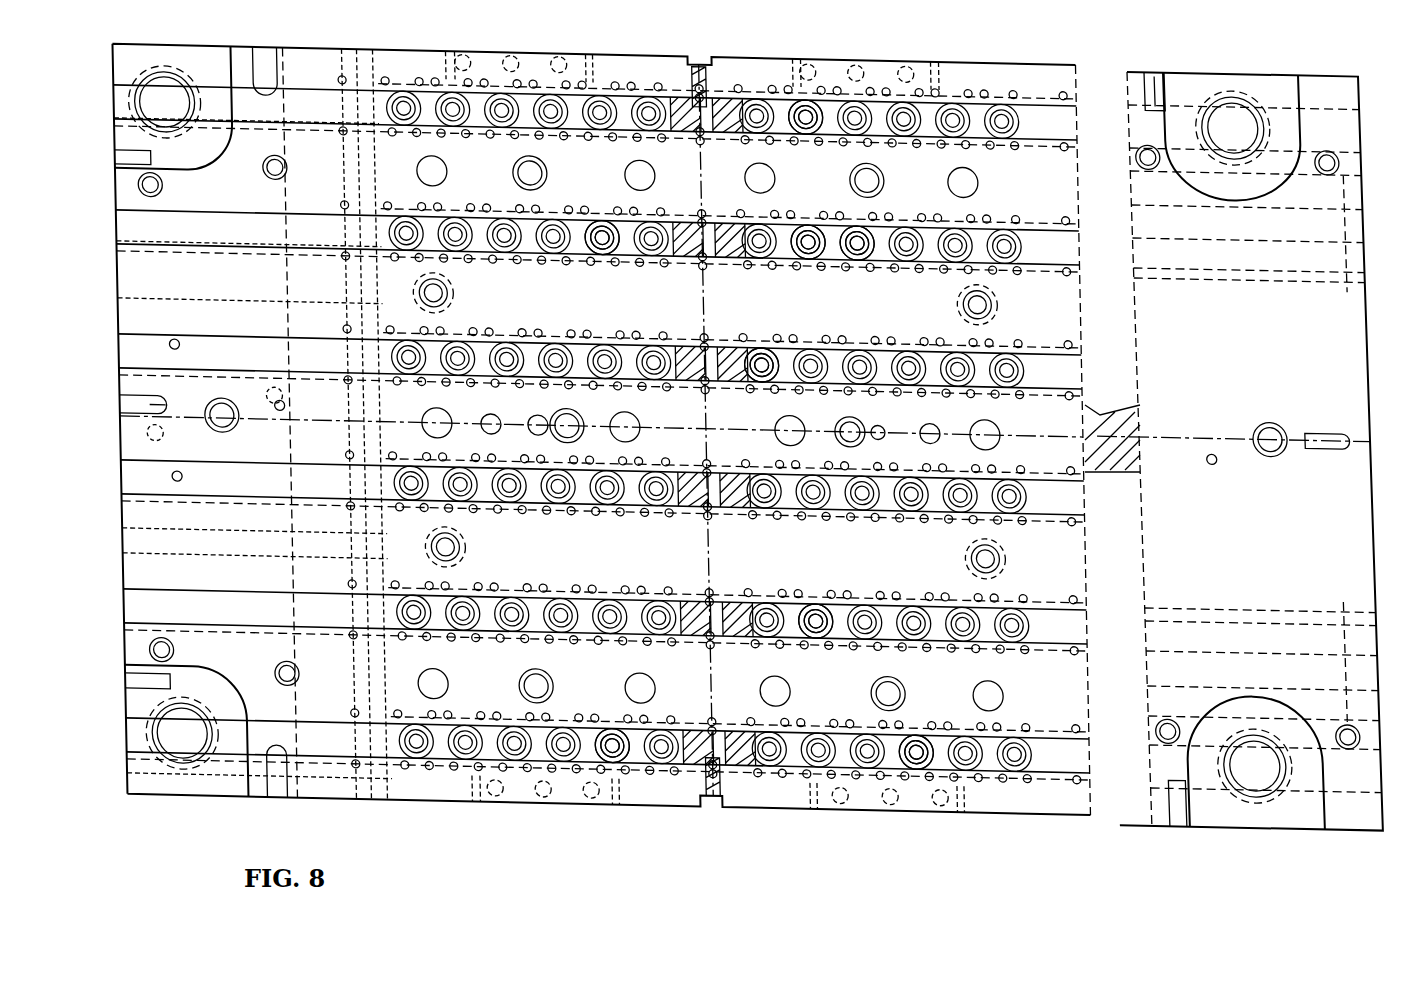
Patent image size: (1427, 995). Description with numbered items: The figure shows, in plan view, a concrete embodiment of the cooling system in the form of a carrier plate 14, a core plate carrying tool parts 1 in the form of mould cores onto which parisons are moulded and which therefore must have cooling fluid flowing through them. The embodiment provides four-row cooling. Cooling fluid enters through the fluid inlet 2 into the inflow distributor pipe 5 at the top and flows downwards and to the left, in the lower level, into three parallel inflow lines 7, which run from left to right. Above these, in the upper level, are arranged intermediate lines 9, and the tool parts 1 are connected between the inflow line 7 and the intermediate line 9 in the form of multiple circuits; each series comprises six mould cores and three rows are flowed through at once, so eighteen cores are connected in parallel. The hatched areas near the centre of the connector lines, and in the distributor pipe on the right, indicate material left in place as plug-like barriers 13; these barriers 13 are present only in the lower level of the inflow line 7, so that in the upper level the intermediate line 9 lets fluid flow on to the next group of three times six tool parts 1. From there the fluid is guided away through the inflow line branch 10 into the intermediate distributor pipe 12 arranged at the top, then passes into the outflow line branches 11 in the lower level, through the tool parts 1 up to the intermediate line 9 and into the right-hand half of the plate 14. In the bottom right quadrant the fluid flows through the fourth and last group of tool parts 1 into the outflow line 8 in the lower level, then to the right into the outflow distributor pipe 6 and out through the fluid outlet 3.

The tool part 1 is at (772, 262).
The fluid inlet 2 is at (1337, 312).
The fluid outlet 3 is at (1340, 582).
The inflow distributor pipe 5 is at (1118, 228).
The outflow distributor pipe 6 is at (1133, 701).
The inflow line 7 is at (818, 122).
The outflow line 8 is at (828, 620).
The intermediate line 9 is at (855, 226).
The inflow line branch 10 is at (580, 232).
The outflow line branch 11 is at (587, 740).
The intermediate distributor pipe 12 is at (324, 235).
The barrier 13 is at (708, 232).
The carrier plate 14 is at (1352, 99).